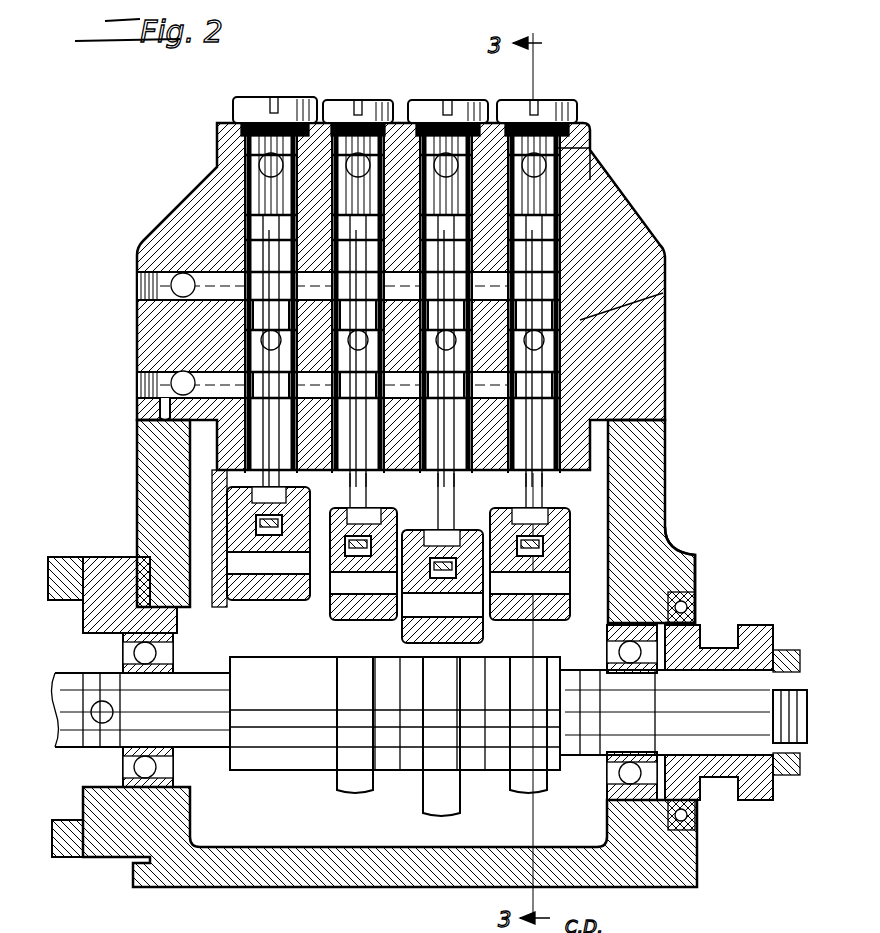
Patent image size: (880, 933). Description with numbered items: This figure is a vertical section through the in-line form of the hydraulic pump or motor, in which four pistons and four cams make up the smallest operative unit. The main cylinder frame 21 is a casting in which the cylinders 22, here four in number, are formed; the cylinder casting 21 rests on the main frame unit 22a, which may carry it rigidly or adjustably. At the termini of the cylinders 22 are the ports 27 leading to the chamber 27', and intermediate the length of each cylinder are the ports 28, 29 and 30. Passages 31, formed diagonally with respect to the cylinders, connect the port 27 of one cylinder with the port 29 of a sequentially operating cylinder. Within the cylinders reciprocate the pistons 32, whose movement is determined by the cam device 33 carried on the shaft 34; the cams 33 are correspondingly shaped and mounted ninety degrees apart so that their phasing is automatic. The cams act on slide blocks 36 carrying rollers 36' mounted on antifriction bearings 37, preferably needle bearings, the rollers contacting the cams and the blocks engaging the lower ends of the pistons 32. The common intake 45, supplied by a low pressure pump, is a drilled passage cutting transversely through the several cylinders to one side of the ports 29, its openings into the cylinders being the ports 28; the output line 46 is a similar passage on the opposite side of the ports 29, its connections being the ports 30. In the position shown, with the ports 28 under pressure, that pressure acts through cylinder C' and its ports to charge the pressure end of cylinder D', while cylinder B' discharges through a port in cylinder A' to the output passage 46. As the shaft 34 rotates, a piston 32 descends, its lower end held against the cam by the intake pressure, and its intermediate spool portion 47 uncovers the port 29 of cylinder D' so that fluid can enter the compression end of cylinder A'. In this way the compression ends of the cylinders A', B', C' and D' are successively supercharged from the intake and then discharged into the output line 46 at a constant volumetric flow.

The cylinder A' is at (277, 269).
The cylinder B' is at (344, 269).
The cylinder C' is at (431, 271).
The cylinder D' is at (536, 271).
The main cylinder frame 21 is at (667, 322).
The cylinders 22 is at (580, 363).
The main frame unit 22a is at (662, 527).
The ports 27 is at (392, 124).
The chamber 27' is at (603, 164).
The intake ports 28 is at (228, 268).
The intermediate ports 29 is at (245, 337).
The output port connections 30 is at (160, 421).
The passages 31 is at (362, 336).
The pistons 32 is at (262, 198).
The cam device 33 is at (370, 792).
The shaft 34 is at (735, 722).
The slide blocks 36 is at (163, 595).
The rollers 36' is at (390, 706).
The antifriction bearings 37 is at (345, 618).
The common intake 45 is at (200, 280).
The output line 46 is at (178, 374).
The spool portion 47 is at (663, 293).